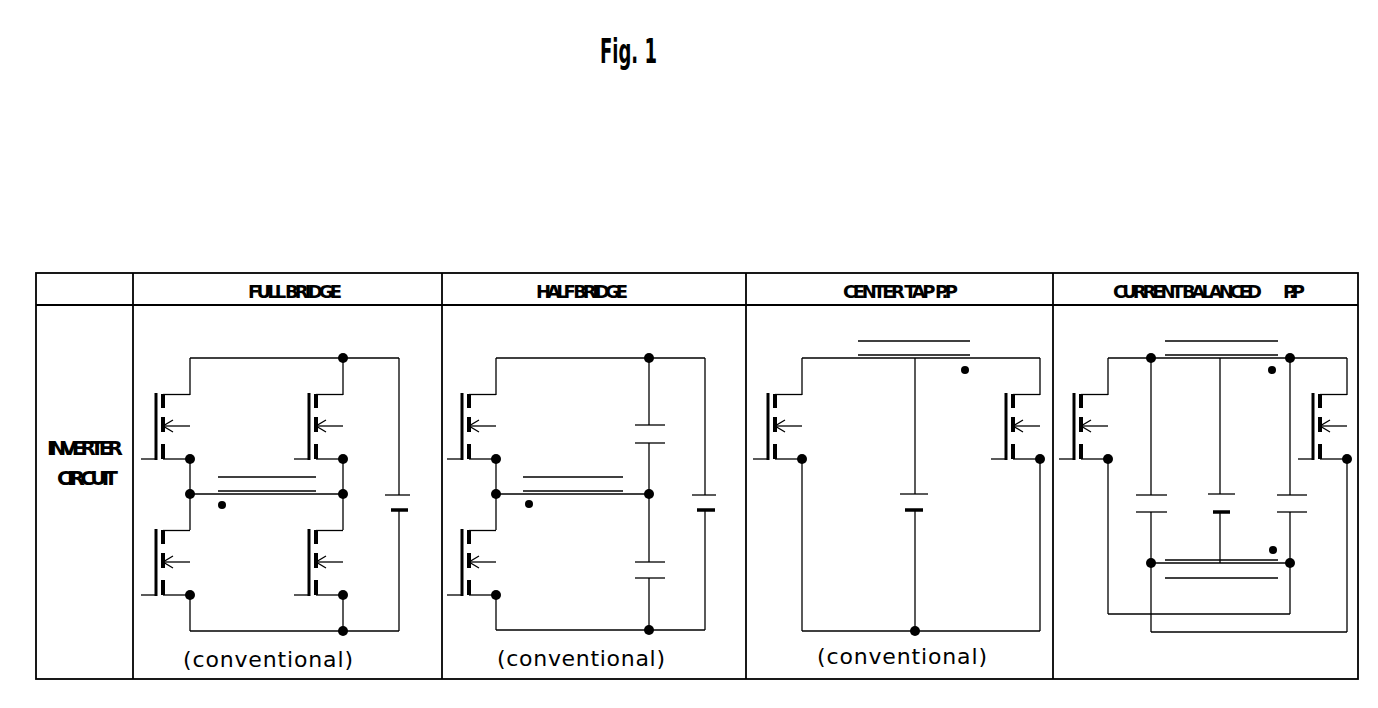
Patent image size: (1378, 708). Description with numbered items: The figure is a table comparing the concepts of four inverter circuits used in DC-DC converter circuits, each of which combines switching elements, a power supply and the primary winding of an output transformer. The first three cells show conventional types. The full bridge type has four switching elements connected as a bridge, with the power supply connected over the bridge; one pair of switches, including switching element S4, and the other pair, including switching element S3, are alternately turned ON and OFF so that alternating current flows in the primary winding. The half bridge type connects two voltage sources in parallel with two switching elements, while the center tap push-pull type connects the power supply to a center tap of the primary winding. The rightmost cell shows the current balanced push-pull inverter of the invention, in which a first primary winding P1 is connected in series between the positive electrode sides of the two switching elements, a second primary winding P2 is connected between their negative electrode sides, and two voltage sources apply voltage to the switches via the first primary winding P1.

The switching element S3 is at (334, 428).
The switching element S4 is at (334, 564).
The first primary winding P1 is at (1221, 344).
The second primary winding P2 is at (1221, 579).